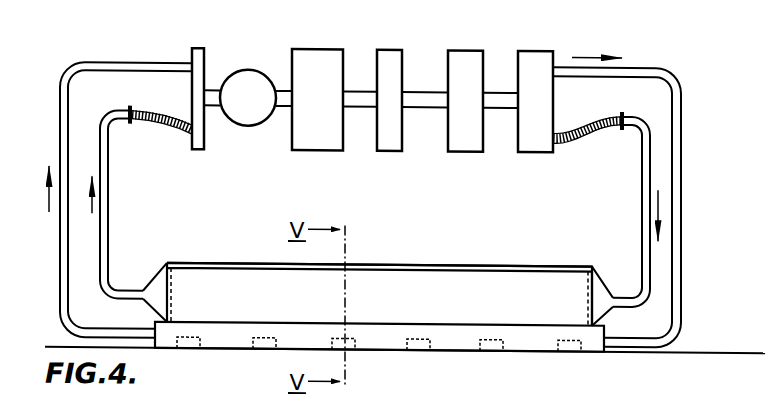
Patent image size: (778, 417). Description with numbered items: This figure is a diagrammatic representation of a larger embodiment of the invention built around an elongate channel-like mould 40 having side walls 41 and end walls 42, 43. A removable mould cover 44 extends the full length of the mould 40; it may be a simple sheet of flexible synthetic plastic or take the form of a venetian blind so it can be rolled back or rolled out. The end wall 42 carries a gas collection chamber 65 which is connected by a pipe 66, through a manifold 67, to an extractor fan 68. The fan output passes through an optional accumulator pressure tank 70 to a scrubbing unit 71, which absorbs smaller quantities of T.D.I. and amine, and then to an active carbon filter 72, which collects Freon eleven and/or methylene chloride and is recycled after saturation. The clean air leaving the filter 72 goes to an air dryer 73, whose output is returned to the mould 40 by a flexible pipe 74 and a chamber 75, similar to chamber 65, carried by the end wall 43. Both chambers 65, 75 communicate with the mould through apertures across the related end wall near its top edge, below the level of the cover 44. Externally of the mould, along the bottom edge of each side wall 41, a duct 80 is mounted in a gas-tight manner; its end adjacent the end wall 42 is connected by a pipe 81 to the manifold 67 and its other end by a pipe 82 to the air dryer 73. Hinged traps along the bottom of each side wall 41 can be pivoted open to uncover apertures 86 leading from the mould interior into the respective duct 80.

The mould 40 is at (384, 298).
The side wall 41 is at (522, 285).
The end wall 42 is at (172, 292).
The end wall 43 is at (585, 293).
The mould cover 44 is at (487, 262).
The gas collection chamber 65 is at (158, 278).
The pipe 66 is at (160, 128).
The manifold 67 is at (197, 52).
The extractor fan 68 is at (247, 73).
The accumulator pressure tank 70 is at (316, 62).
The scrubbing unit 71 is at (390, 57).
The active carbon filter 72 is at (465, 57).
The air dryer 73 is at (532, 62).
The flexible pipe 74 is at (590, 130).
The chamber 75 is at (603, 300).
The duct 80 is at (457, 330).
The pipe 81 is at (63, 250).
The pipe 82 is at (672, 250).
The apertures 86 is at (572, 350).